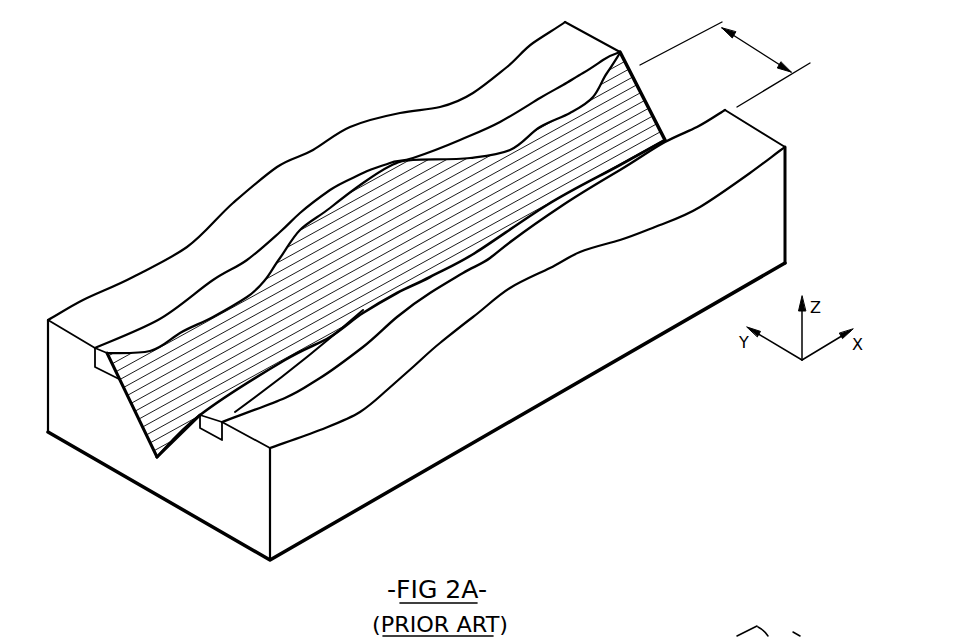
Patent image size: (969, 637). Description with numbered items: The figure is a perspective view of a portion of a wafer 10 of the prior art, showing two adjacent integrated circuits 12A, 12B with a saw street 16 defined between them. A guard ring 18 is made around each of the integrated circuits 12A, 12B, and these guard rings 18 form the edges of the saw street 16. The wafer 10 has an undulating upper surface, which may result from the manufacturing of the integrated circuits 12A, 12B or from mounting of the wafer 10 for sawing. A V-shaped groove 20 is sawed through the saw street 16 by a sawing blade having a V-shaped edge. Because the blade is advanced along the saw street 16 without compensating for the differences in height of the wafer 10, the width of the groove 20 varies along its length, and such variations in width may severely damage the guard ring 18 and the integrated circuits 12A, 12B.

The wafer 10 is at (147, 130).
The integrated circuit 12A is at (323, 150).
The integrated circuit 12B is at (732, 157).
The saw street 16 is at (725, 64).
The guard ring 18 is at (582, 80).
The V-shaped groove 20 is at (162, 425).